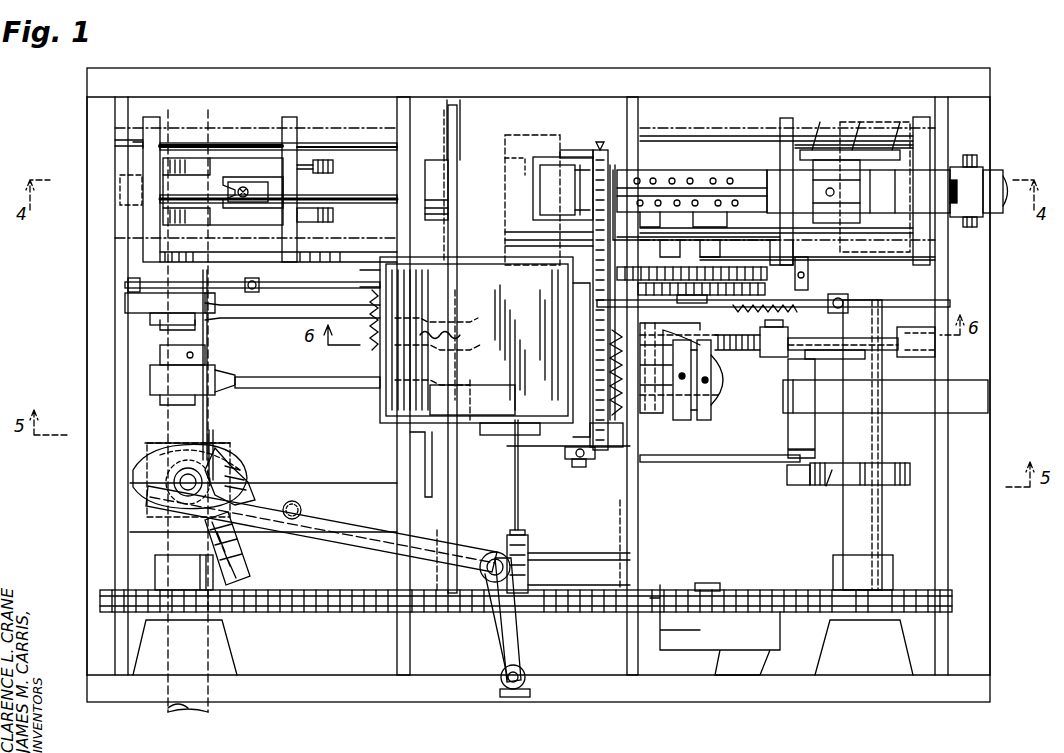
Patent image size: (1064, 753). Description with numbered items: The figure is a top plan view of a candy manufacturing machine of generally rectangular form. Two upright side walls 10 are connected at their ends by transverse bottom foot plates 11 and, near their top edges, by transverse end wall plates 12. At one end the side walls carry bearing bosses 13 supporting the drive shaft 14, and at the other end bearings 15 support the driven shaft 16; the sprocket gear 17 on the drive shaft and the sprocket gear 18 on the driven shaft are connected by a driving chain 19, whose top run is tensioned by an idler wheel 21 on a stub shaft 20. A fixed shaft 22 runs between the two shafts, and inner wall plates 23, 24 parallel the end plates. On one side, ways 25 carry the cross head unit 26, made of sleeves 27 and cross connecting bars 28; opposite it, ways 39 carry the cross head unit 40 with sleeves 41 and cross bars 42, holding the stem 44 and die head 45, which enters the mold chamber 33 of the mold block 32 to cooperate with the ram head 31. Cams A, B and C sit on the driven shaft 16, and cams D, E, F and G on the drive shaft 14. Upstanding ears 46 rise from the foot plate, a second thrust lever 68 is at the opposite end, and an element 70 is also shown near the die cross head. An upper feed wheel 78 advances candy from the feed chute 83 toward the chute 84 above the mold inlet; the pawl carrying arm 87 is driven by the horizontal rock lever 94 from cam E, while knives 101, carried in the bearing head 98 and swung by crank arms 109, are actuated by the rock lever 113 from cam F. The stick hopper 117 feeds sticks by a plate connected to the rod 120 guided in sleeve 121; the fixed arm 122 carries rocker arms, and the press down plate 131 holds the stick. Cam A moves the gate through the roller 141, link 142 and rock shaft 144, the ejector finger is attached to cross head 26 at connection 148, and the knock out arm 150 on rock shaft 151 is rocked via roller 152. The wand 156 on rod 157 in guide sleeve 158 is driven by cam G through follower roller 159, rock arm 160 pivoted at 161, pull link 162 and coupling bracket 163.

The upright side walls 10 is at (370, 80).
The transverse bottom foot plates 11 is at (100, 543).
The transverse end wall plates 12 is at (118, 459).
The bearing bosses 13 is at (225, 649).
The drive shaft 14 is at (208, 712).
The bearings 15 is at (830, 639).
The driven shaft 16 is at (850, 533).
The sprocket gear 17 is at (158, 590).
The sprocket gear 18 is at (788, 598).
The driving chain 19 is at (658, 590).
The stub shaft 20 is at (710, 583).
The idler wheel 21 is at (672, 612).
The fixed shaft 22 is at (457, 130).
The inner wall plate 23 is at (638, 502).
The inner wall plate 24 is at (398, 453).
The ways 25 is at (718, 137).
The cross head unit 26 is at (894, 113).
The sleeves 27 is at (824, 150).
The cross connecting bars 28 is at (790, 118).
The ram head 31 is at (580, 187).
The mold block 32 is at (520, 142).
The mold chamber 33 is at (518, 162).
The ways 39 is at (356, 140).
The cross head unit 40 is at (277, 123).
The sleeves 41 is at (240, 141).
The cross bars 42 is at (150, 216).
The stem 44 is at (368, 204).
The die head 45 is at (445, 164).
The upstanding ears 46 is at (975, 162).
The second thrust lever 68 is at (333, 168).
The clamp 70 is at (196, 158).
The upper feed wheel 78 is at (684, 170).
The feed chute 83 is at (772, 170).
The chute 84 is at (545, 150).
The pawl carrying arm 87 is at (950, 302).
The horizontal rock lever 94 is at (250, 311).
The bearing head 98 is at (662, 413).
The knives 101 is at (602, 142).
The crank arms 109 is at (712, 400).
The rock lever 113 is at (310, 391).
The hopper 117 is at (495, 444).
The rod 120 is at (870, 346).
The guide sleeve 121 is at (920, 353).
The fixed arm 122 is at (985, 398).
The stick press down plate 131 is at (473, 427).
The cam follower roller 141 is at (787, 478).
The link 142 is at (750, 459).
The rock shaft 144 is at (570, 468).
The ejector finger connection 148 is at (812, 292).
The knock out arm 150 is at (458, 230).
The rock shaft 151 is at (355, 290).
The roller 152 is at (260, 287).
The reciprocating wand 156 is at (520, 520).
The rod 157 is at (520, 657).
The guide sleeve 158 is at (529, 550).
The follower roller 159 is at (226, 452).
The rock arm 160 is at (380, 533).
The pivot 161 is at (298, 500).
The pull link 162 is at (500, 644).
The coupling bracket 163 is at (508, 697).
The stick gate cam A is at (826, 488).
The stick plate cam B is at (800, 357).
The ram head cam C is at (961, 190).
The die cam D is at (120, 187).
The candy feed cam E is at (125, 303).
The cutter operating cam F is at (150, 379).
The wobble cam G is at (140, 481).